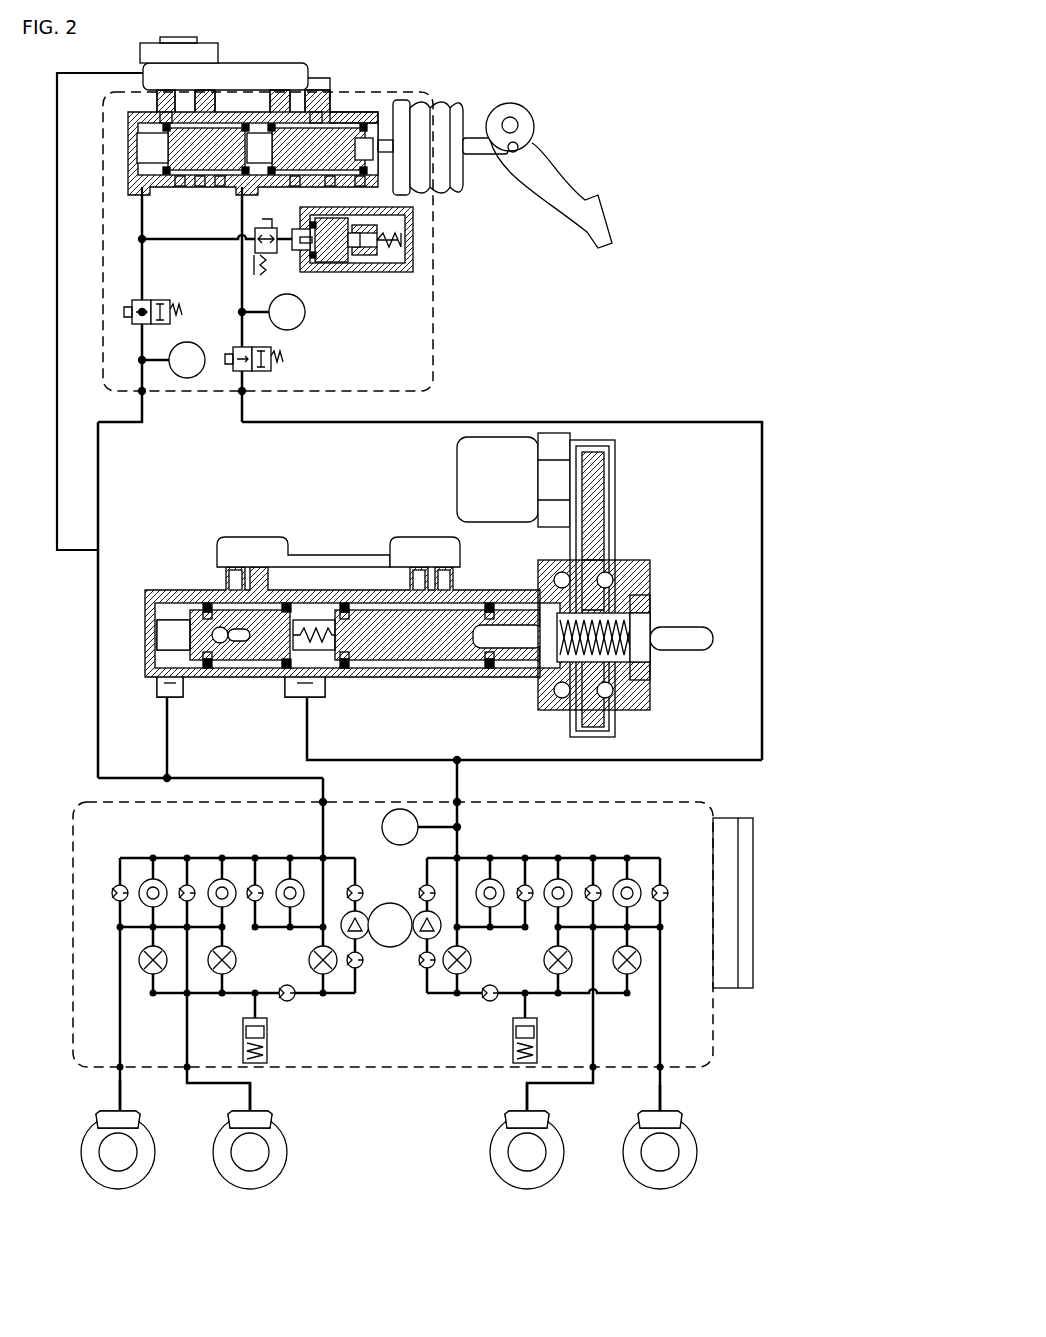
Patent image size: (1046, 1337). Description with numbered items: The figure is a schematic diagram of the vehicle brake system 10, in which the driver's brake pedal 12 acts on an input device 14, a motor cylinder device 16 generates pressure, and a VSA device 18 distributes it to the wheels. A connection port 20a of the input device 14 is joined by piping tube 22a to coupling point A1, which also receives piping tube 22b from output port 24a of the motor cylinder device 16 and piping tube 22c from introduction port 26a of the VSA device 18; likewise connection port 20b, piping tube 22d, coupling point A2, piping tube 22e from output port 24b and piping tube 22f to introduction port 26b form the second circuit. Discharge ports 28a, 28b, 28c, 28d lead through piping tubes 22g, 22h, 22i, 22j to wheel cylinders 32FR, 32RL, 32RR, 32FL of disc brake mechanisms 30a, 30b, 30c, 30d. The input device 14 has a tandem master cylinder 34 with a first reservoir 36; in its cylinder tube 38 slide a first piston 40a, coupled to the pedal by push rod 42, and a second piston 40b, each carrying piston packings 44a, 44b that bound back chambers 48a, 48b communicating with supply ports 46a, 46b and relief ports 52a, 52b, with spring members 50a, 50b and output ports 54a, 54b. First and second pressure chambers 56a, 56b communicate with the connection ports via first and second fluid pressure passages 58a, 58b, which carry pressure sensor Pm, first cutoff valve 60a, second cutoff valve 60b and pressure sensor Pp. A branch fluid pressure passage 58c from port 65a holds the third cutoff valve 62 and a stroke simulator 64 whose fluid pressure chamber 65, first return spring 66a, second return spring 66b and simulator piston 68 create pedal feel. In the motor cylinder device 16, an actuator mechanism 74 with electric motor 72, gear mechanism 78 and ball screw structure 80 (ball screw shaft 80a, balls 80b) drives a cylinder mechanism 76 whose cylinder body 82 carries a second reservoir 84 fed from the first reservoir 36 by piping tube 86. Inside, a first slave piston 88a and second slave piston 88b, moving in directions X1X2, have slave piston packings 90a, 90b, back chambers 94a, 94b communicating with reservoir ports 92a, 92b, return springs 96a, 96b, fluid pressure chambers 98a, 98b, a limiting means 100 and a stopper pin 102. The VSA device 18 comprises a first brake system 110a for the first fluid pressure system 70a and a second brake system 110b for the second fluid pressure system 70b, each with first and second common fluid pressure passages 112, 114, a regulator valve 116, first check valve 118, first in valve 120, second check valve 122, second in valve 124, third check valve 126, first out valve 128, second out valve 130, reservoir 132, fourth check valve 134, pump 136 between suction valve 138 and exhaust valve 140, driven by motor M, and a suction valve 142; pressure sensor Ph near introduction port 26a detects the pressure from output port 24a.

The vehicle brake system 10 is at (557, 78).
The brake pedal 12 is at (608, 220).
The input device 14 is at (440, 305).
The motor cylinder device 16 is at (634, 498).
The VSA device 18 is at (605, 800).
The connection port 20a is at (242, 395).
The connection port 20b is at (144, 400).
The piping tube 22a is at (762, 505).
The piping tube 22b is at (378, 760).
The piping tube 22c is at (460, 775).
The piping tube 22d is at (98, 580).
The piping tube 22e is at (167, 728).
The piping tube 22f is at (268, 778).
The piping tube 22g is at (662, 1098).
The piping tube 22h is at (527, 1090).
The piping tube 22i is at (252, 1090).
The piping tube 22j is at (118, 1098).
The output port 24a is at (312, 698).
The output port 24b is at (170, 698).
The introduction port 26a is at (462, 800).
The introduction port 26b is at (326, 800).
The discharge port 28a is at (662, 1070).
The discharge port 28b is at (595, 1070).
The discharge port 28c is at (185, 1070).
The discharge port 28d is at (118, 1068).
The disc brake mechanism 30a is at (699, 1181).
The disc brake mechanism 30b is at (567, 1181).
The disc brake mechanism 30c is at (289, 1181).
The disc brake mechanism 30d is at (157, 1181).
The wheel cylinder 32FL is at (140, 1124).
The wheel cylinder 32RR is at (272, 1124).
The wheel cylinder 32RL is at (549, 1124).
The wheel cylinder 32FR is at (682, 1124).
The tandem master cylinder 34 is at (335, 100).
The first reservoir 36 is at (232, 62).
The cylinder tube 38 is at (360, 112).
The first piston 40a is at (318, 120).
The second piston 40b is at (168, 120).
The push rod 42 is at (372, 150).
The piston packing 44a is at (220, 186).
The piston packing 44b is at (180, 186).
The supply port 46a is at (315, 100).
The supply port 46b is at (205, 100).
The back chamber 48a is at (335, 180).
The back chamber 48b is at (200, 186).
The spring member 50a is at (300, 78).
The spring member 50b is at (135, 73).
The relief port 52a is at (280, 100).
The relief port 52b is at (160, 95).
The output port 54a is at (248, 192).
The output port 54b is at (135, 190).
The first pressure chamber 56a is at (310, 149).
The second pressure chamber 56b is at (193, 149).
The first fluid pressure passage 58a is at (240, 302).
The second fluid pressure passage 58b is at (182, 233).
The branch fluid pressure passage 58c is at (195, 245).
The first cutoff valve 60a is at (275, 368).
The second cutoff valve 60b is at (155, 296).
The third cutoff valve 62 is at (256, 258).
The stroke simulator 64 is at (432, 216).
The fluid pressure chamber 65 is at (313, 262).
The port 65a is at (300, 252).
The first return spring 66a is at (395, 262).
The second return spring 66b is at (365, 262).
The simulator piston 68 is at (335, 262).
The first fluid pressure system 70a is at (531, 406).
The second fluid pressure system 70b is at (77, 629).
The electric motor 72 is at (457, 456).
The actuator mechanism 74 is at (662, 563).
The cylinder mechanism 76 is at (396, 676).
The gear mechanism 78 is at (615, 520).
The ball screw structure 80 is at (705, 628).
The ball screw shaft 80a is at (648, 650).
The balls 80b is at (640, 615).
The cylinder body 82 is at (478, 600).
The second reservoir 84 is at (455, 478).
The piping tube 86 is at (57, 302).
The first slave piston 88a is at (462, 675).
The second slave piston 88b is at (260, 662).
The slave piston packing 90a is at (285, 672).
The slave piston packing 90b is at (208, 670).
The reservoir port 92a is at (445, 567).
The reservoir port 92b is at (250, 545).
The first back chamber 94a is at (440, 676).
The second back chamber 94b is at (235, 670).
The first return spring 96a is at (345, 675).
The second return spring 96b is at (170, 600).
The first fluid pressure chamber 98a is at (320, 641).
The second fluid pressure chamber 98b is at (175, 635).
The limiting means 100 is at (330, 625).
The stopper pin 102 is at (233, 580).
The first brake system 110a is at (656, 844).
The second brake system 110b is at (127, 844).
The first common fluid pressure passage 112 is at (200, 858).
The second common fluid pressure passage 114 is at (205, 995).
The regulator valve 116 is at (292, 878).
The first check valve 118 is at (255, 884).
The first in valve 120 is at (152, 878).
The second check valve 122 is at (118, 884).
The second in valve 124 is at (220, 878).
The third check valve 126 is at (185, 884).
The first out valve 128 is at (148, 976).
The second out valve 130 is at (238, 958).
The reservoir 132 is at (268, 1054).
The fourth check valve 134 is at (292, 1002).
The pump 136 is at (365, 938).
The suction valve 138 is at (420, 968).
The exhaust valve 140 is at (420, 886).
The suction valve 142 is at (350, 985).
The motor M is at (390, 925).
The pressure sensor Pm is at (287, 312).
The pressure sensor Pp is at (172, 344).
The pressure sensor Ph is at (421, 827).
The coupling point A1 is at (486, 741).
The coupling point A2 is at (206, 767).
The arrow directions X1X2 is at (367, 527).